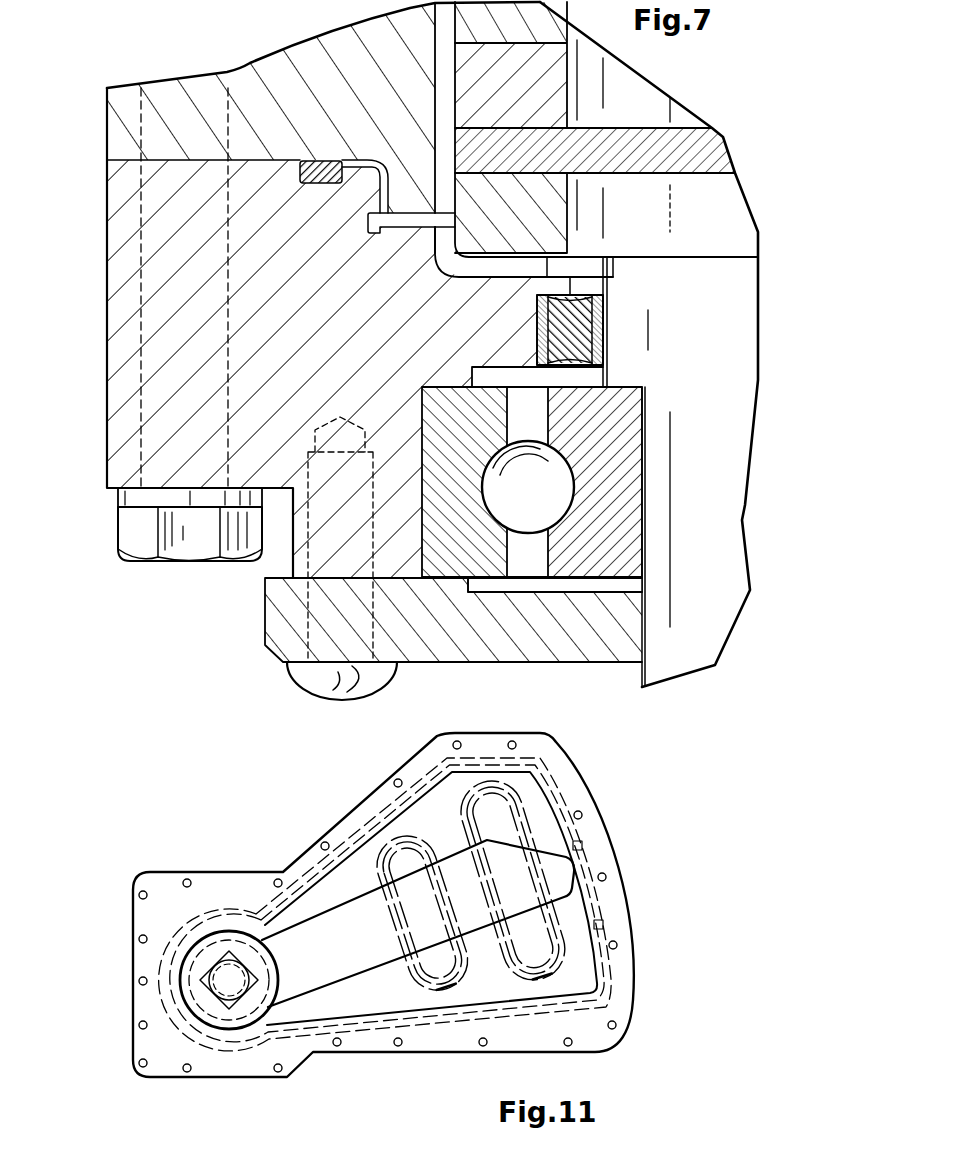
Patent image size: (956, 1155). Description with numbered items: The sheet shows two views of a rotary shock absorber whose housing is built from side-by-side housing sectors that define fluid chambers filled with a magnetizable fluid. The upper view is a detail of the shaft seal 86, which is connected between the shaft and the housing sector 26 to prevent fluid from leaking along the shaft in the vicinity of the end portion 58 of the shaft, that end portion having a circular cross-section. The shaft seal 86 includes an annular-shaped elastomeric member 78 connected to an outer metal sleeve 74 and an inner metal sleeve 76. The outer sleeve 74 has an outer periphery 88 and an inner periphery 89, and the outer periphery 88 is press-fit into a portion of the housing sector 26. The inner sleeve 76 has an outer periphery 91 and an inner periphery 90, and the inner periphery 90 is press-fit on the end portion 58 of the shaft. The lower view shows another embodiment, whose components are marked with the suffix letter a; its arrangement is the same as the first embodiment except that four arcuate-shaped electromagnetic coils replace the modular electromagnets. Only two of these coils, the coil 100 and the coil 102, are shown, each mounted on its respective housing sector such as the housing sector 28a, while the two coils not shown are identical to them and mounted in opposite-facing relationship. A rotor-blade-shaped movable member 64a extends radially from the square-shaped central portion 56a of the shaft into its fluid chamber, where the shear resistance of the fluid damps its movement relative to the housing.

In FIG. 7, the housing sector 26 is at (280, 312).
In FIG. 7, the end portion of the shaft 58 is at (722, 330).
In FIG. 7, the outer metal sleeve 74 is at (537, 330).
In FIG. 7, the inner metal sleeve 76 is at (603, 345).
In FIG. 7, the annular-shaped elastomeric member 78 is at (593, 313).
In FIG. 7, the shaft seal 86 is at (510, 382).
In FIG. 7, the outer periphery of the outer sleeve 88 is at (547, 373).
In FIG. 7, the inner periphery of the outer sleeve 89 is at (562, 366).
In FIG. 7, the inner periphery of the inner sleeve 90 is at (585, 318).
In FIG. 7, the outer periphery of the inner sleeve 91 is at (643, 423).
In FIG. 11, the housing sector 28a is at (167, 888).
In FIG. 11, the square-shaped central portion of the shaft 56a is at (222, 1003).
In FIG. 11, the movable member 64a is at (338, 907).
In FIG. 11, the arcuate-shaped electromagnetic coil 100 is at (402, 987).
In FIG. 11, the arcuate-shaped electromagnetic coil 102 is at (563, 942).